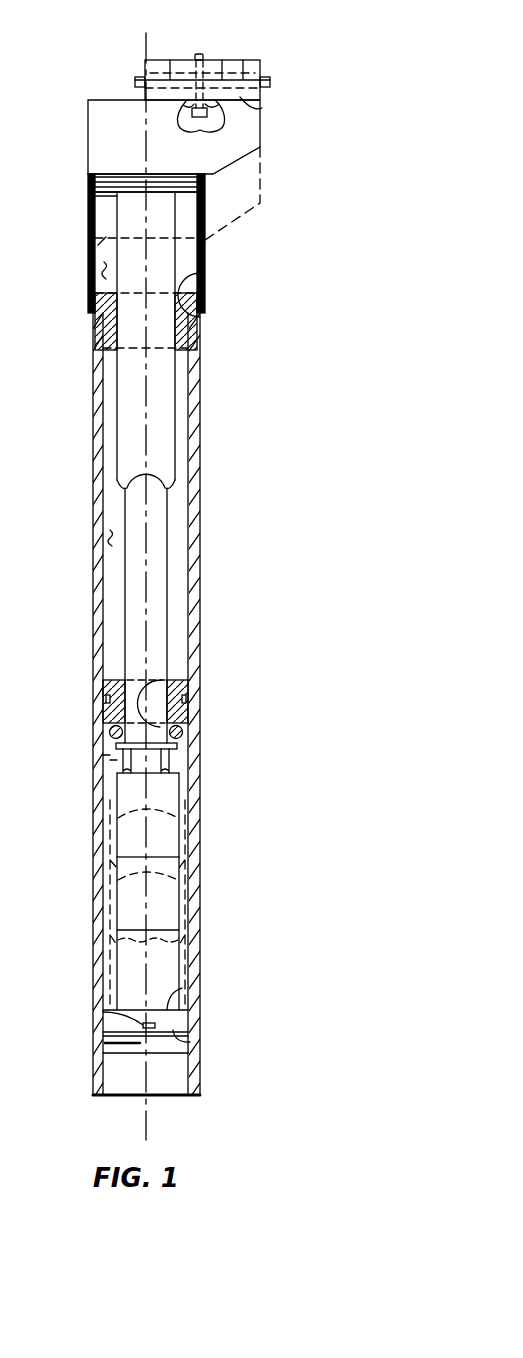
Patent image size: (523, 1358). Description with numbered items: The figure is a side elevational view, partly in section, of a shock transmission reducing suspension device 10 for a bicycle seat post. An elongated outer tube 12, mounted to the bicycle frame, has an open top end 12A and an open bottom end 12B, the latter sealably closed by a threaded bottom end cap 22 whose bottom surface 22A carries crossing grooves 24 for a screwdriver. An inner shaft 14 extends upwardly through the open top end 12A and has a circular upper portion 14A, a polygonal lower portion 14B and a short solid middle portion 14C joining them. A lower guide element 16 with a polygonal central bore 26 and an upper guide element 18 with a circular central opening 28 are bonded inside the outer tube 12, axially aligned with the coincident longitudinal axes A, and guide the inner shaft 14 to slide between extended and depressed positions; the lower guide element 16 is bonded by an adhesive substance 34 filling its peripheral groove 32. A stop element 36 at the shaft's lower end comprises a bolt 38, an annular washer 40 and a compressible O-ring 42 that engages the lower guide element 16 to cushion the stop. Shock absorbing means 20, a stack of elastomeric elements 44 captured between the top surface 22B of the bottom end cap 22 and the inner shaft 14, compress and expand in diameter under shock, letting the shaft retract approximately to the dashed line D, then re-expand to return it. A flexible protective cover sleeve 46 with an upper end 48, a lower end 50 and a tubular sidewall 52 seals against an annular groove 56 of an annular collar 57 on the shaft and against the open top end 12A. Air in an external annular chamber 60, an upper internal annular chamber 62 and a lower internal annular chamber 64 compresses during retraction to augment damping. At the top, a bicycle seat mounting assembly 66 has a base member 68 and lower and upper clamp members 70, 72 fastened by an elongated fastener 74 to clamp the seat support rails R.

The shock transmission reducing suspension device 10 is at (58, 118).
The outer tube 12 is at (158, 704).
The open top end 12A is at (93, 330).
The open bottom end 12B is at (97, 1050).
The inner shaft 14 is at (155, 467).
The upper portion 14A is at (127, 383).
The lower portion 14B is at (132, 637).
The middle portion 14C is at (128, 484).
The lower guide element 16 is at (181, 690).
The upper guide element 18 is at (189, 335).
The shock absorbing means 20 is at (190, 785).
The bottom end cap 22 is at (115, 1022).
The bottom surface 22A is at (190, 1041).
The top surface 22B is at (181, 989).
The crossing grooves 24 is at (113, 1015).
The central bore 26 is at (165, 690).
The central opening 28 is at (200, 285).
The peripheral groove 32 is at (108, 700).
The adhesive substance 34 is at (187, 700).
The stop element 36 is at (104, 755).
The bolt 38 is at (170, 760).
The annular washer 40 is at (116, 746).
The compressible O-ring 42 is at (110, 729).
The elastomeric elements 44 is at (128, 790).
The protective cover sleeve 46 is at (94, 288).
The upper end 48 is at (206, 184).
The lower end 50 is at (206, 305).
The tubular sidewall 52 is at (206, 223).
The annular groove 56 is at (118, 180).
The annular collar 57 is at (100, 199).
The external annular chamber 60 is at (103, 270).
The upper internal annular chamber 62 is at (108, 540).
The lower internal annular chamber 64 is at (108, 770).
The bicycle seat mounting assembly 66 is at (96, 90).
The base member 68 is at (93, 160).
The lower clamp member 70 is at (262, 111).
The upper clamp member 72 is at (180, 60).
The elongated fastener 74 is at (200, 130).
The longitudinal axes A is at (150, 610).
The section marker C is at (4, 846).
The dashed line D is at (98, 263).
The support rails R is at (270, 86).